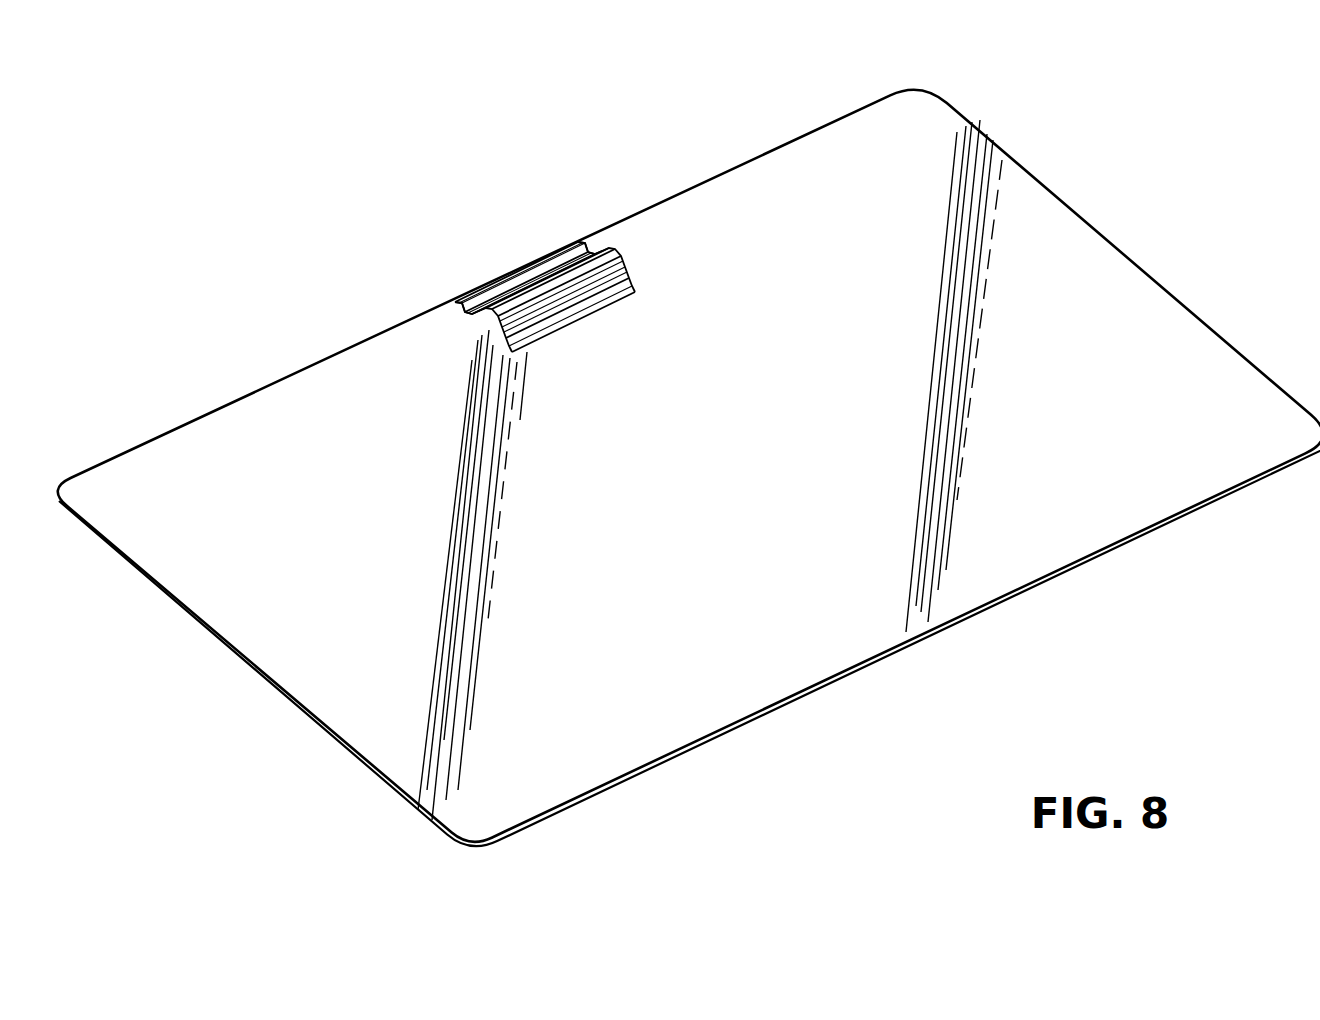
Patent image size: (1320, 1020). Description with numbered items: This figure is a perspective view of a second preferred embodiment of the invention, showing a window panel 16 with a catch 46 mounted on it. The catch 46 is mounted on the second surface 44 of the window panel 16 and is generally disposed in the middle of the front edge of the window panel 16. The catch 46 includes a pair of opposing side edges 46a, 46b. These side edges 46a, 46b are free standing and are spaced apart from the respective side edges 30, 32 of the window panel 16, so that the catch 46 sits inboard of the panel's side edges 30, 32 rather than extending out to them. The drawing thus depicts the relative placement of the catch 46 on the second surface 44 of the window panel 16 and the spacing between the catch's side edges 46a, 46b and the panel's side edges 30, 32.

The window panel 16 is at (739, 500).
The side edge of the window panel 30 is at (243, 668).
The side edge of the window panel 32 is at (1167, 284).
The second surface 44 is at (1020, 203).
The catch 46 is at (521, 238).
The side edge of the catch 46a is at (497, 323).
The side edge of the catch 46b is at (629, 257).